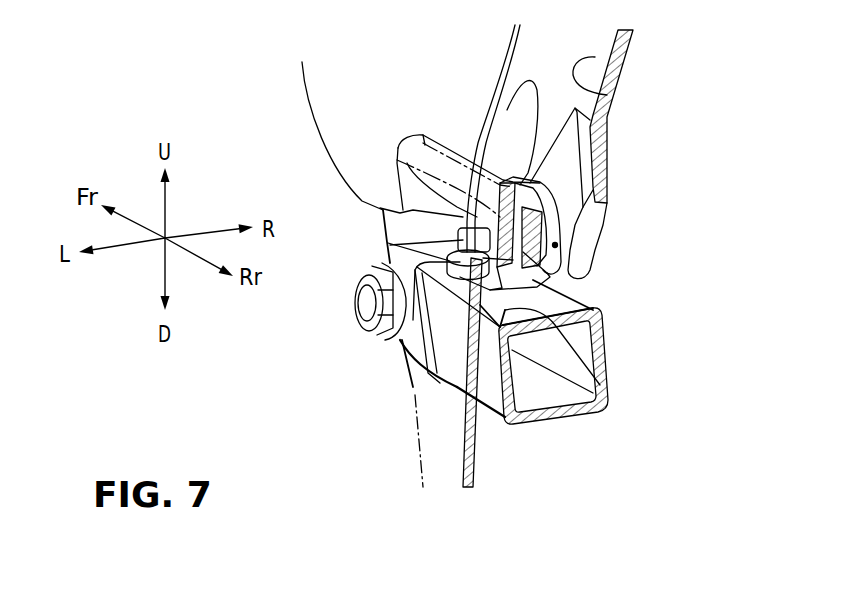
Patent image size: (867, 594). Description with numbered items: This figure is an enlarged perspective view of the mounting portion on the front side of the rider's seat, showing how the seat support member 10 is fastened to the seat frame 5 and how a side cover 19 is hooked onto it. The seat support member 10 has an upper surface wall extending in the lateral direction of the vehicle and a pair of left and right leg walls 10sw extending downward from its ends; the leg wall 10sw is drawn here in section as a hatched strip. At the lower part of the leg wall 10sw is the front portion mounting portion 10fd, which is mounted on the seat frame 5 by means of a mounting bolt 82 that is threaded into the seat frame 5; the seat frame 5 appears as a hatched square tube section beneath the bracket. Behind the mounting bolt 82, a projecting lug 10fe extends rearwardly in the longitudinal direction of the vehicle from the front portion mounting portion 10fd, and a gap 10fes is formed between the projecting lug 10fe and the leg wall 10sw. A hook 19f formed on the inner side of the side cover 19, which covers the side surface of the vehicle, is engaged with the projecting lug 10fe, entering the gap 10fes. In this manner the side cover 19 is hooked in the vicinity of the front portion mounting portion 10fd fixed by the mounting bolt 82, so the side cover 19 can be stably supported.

The seat frame 5 is at (560, 348).
The seat support member 10 is at (502, 71).
The front portion mounting portion 10fd is at (487, 157).
The projecting lug 10fe is at (590, 303).
The gap 10fes is at (557, 246).
The leg wall 10sw is at (607, 95).
The side cover 19 is at (407, 393).
The hook 19f is at (560, 222).
The mounting bolt 82 is at (408, 200).